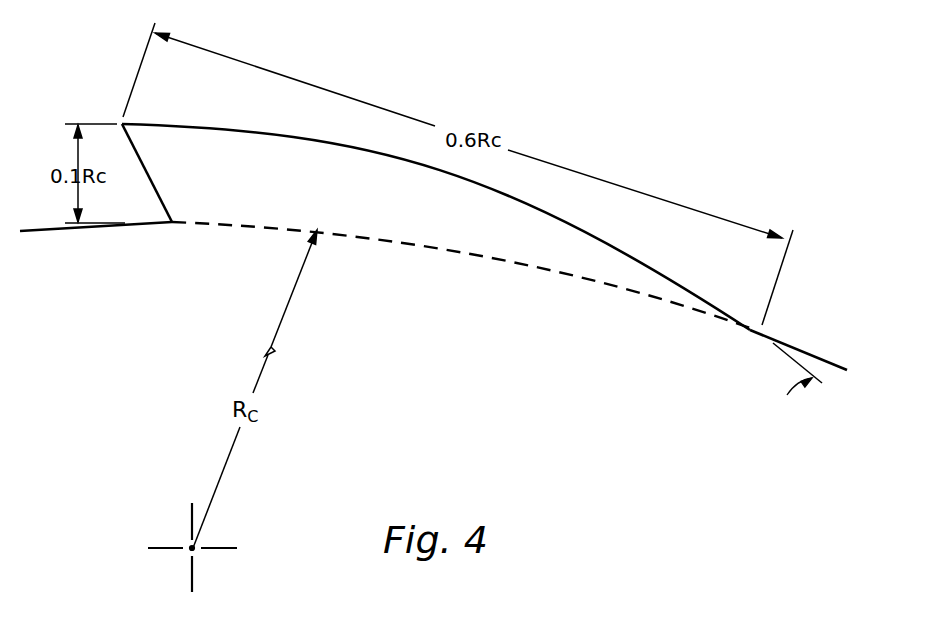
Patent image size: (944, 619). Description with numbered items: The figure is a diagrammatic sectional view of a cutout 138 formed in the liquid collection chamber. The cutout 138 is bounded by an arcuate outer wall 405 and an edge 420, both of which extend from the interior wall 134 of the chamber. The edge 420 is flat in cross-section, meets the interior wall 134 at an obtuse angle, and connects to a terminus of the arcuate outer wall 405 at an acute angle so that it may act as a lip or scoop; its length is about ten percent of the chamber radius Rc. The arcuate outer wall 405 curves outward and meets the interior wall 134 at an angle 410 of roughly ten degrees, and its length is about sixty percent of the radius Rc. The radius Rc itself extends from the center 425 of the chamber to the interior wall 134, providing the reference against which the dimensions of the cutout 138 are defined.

The interior wall 134 is at (153, 227).
The cutout 138 is at (453, 231).
The arcuate outer wall 405 is at (323, 142).
The angle 410 is at (823, 343).
The edge 420 is at (152, 175).
The center 425 is at (190, 546).